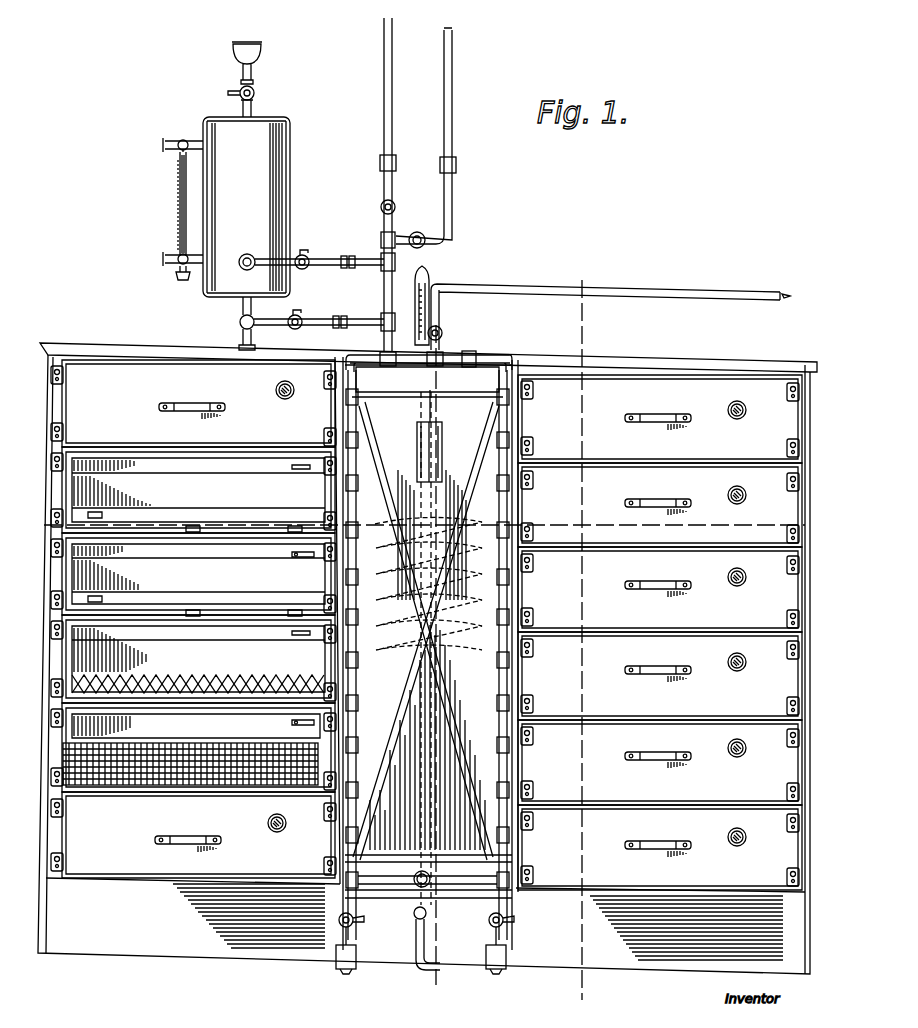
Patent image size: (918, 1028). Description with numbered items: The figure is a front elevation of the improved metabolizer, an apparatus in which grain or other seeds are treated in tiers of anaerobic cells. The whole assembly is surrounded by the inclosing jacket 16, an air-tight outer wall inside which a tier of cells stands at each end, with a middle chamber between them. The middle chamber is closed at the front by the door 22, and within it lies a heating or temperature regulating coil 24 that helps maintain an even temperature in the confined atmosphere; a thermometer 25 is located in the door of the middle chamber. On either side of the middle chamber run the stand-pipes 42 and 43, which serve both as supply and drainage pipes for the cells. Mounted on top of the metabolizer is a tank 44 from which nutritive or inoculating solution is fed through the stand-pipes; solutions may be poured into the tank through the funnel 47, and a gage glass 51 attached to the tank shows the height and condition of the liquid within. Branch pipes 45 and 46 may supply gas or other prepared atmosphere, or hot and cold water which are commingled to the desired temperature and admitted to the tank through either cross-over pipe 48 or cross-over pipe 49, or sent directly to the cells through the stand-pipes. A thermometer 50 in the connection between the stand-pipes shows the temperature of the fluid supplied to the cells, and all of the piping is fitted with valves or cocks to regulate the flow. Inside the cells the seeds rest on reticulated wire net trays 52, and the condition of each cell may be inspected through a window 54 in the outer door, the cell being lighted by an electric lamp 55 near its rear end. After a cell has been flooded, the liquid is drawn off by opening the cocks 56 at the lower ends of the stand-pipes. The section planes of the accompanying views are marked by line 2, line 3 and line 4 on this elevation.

The inclosing jacket 16 is at (119, 348).
The door of the middle chamber 22 is at (445, 868).
The heating or temperature regulating coil 24 is at (420, 583).
The thermometer 25 is at (443, 447).
The stand-pipe 42 is at (402, 656).
The stand-pipe 43 is at (452, 613).
The tank 44 is at (246, 207).
The branch pipe 45 is at (384, 118).
The branch pipe 46 is at (443, 212).
The funnel 47 is at (262, 52).
The cross-over pipe 48 is at (319, 258).
The cross-over pipe 49 is at (331, 316).
The thermometer 50 is at (432, 279).
The gage glass 51 is at (178, 232).
The tray 52 is at (202, 752).
The window 54 is at (276, 390).
The electric lamp 55 is at (292, 556).
The cock 56 is at (358, 923).
The line 2— 2 is at (586, 639).
The line 3— 3 is at (442, 656).
The line 4— 4 is at (421, 520).